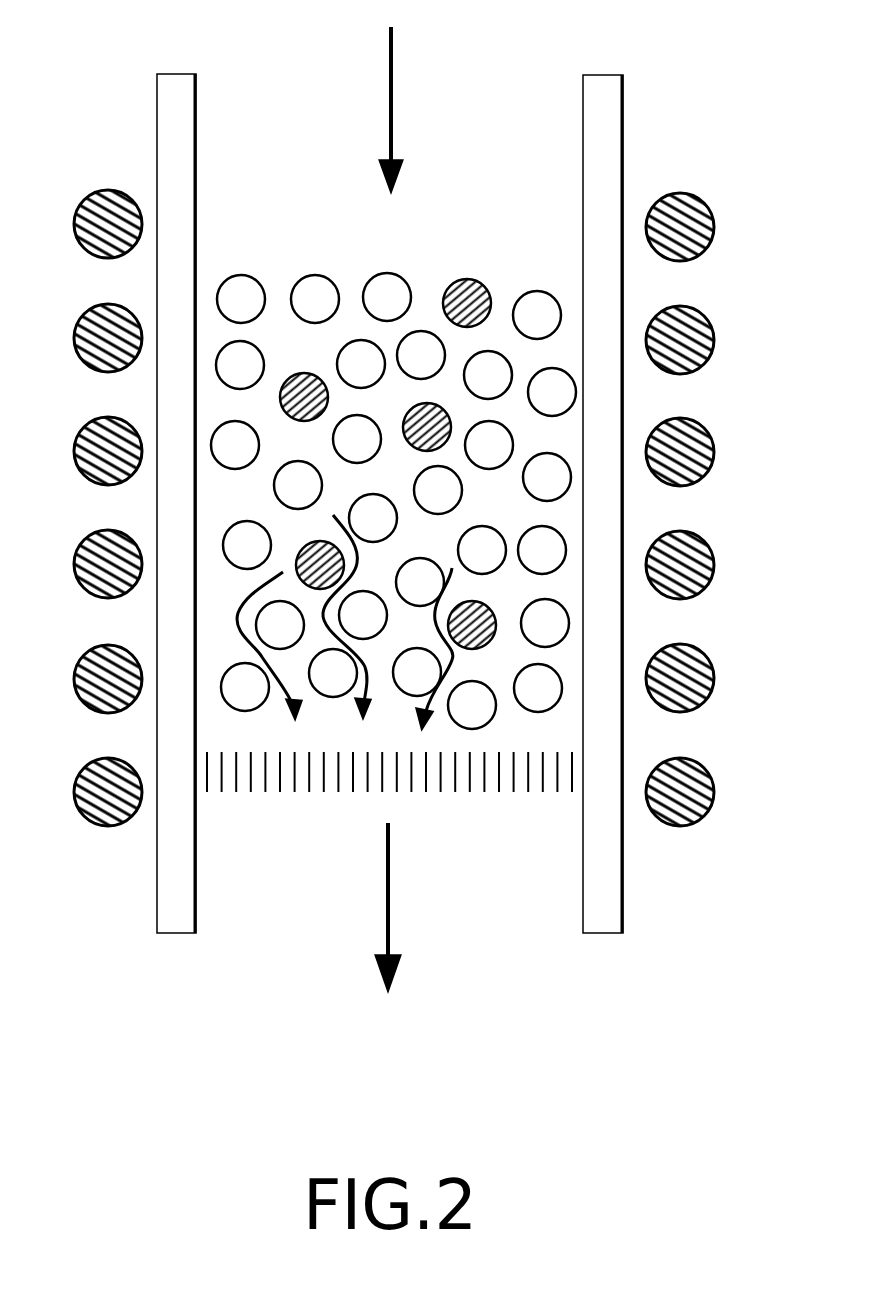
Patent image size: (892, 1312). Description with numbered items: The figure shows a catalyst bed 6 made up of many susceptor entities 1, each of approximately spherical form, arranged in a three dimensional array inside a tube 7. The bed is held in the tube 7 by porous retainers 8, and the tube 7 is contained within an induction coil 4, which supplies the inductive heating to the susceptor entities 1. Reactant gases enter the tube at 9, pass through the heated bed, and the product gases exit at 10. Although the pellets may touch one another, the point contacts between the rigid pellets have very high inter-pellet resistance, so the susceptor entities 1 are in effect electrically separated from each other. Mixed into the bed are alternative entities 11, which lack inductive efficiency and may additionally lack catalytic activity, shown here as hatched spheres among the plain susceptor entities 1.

The susceptor entity 1 is at (405, 279).
The induction coil 4 is at (700, 308).
The catalyst bed 6 is at (210, 250).
The tube 7 is at (624, 133).
The porous retainers 8 is at (437, 777).
The reactant gas inlet 9 is at (390, 78).
The product gas outlet 10 is at (386, 938).
The alternative entities 11 is at (294, 418).